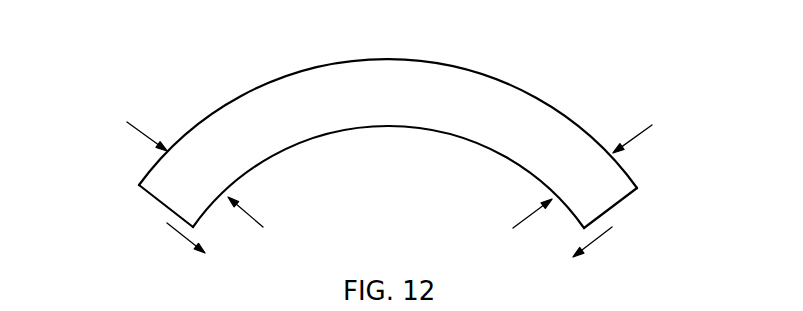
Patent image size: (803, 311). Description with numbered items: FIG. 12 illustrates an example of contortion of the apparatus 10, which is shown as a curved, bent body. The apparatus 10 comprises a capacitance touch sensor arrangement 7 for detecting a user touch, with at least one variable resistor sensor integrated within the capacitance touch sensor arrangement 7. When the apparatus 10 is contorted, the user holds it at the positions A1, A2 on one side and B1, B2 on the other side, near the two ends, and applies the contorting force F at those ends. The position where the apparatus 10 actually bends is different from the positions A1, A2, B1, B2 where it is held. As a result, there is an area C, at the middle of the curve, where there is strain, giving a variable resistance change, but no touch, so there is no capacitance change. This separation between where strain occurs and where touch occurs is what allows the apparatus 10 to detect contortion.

The apparatus 10 is at (338, 118).
The capacitance touch sensor arrangement 7 is at (385, 58).
The area of strain without touch C is at (340, 46).
The holding position A1 is at (152, 132).
The holding position A2 is at (240, 214).
The holding position B1 is at (641, 146).
The holding position B2 is at (535, 220).
The contorting force F is at (389, 253).